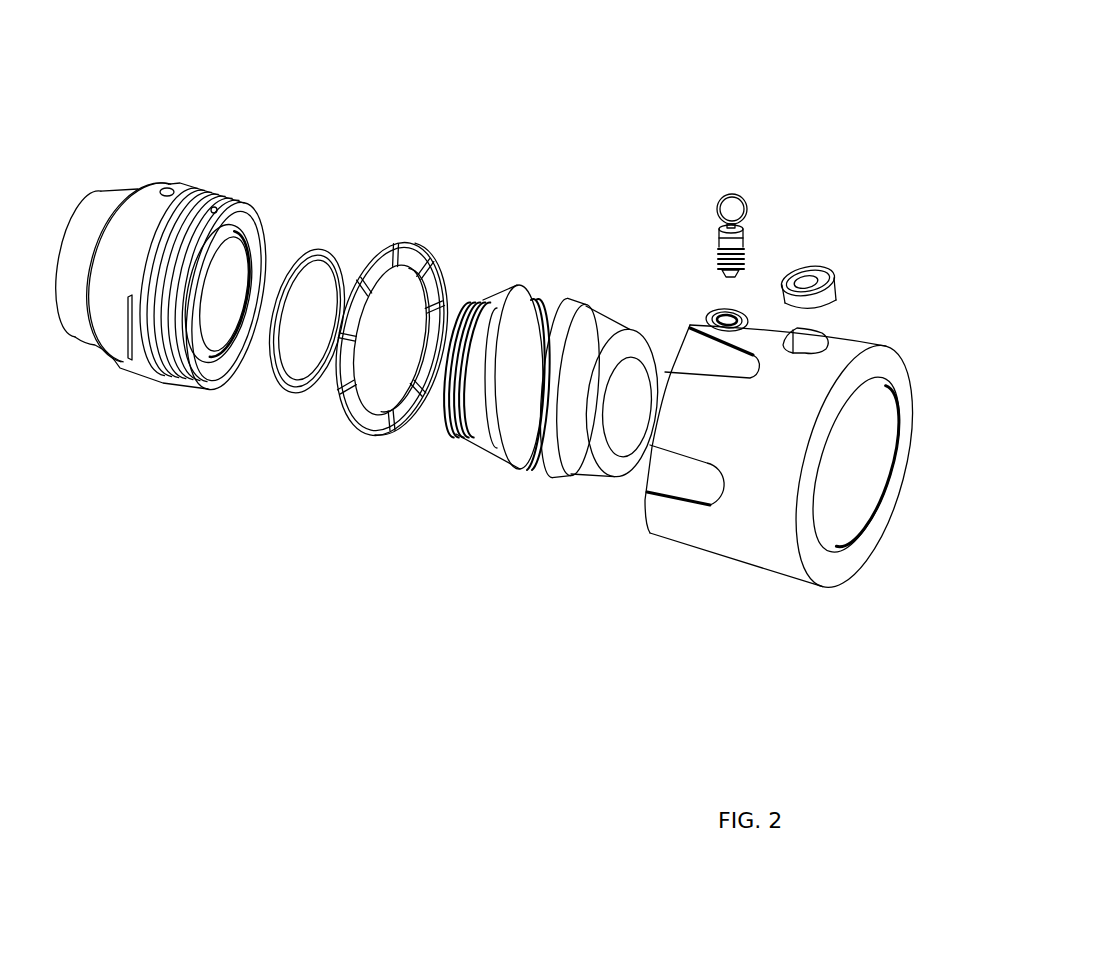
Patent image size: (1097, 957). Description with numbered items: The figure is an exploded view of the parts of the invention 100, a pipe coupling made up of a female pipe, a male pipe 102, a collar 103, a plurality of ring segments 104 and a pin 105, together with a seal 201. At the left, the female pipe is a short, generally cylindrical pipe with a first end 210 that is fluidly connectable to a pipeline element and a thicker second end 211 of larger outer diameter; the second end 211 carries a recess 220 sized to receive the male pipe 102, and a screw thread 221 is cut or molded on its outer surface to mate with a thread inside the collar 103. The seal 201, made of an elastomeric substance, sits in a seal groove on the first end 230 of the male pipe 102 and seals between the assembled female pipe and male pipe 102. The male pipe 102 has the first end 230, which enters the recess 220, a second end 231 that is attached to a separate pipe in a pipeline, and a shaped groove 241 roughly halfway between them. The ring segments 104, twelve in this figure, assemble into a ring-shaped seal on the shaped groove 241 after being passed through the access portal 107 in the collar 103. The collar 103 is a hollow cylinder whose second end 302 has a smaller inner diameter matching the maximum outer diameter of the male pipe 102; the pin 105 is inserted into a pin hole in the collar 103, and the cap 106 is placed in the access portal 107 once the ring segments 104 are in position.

The invention 100 is at (458, 132).
The male pipe 102 is at (566, 272).
The collar 103 is at (763, 587).
The ring segments 104 is at (367, 455).
The pin 105 is at (732, 175).
The cap 106 is at (818, 246).
The access portal 107 is at (823, 320).
The seal 201 is at (286, 409).
The first end 210 is at (86, 352).
The second end 211 is at (208, 402).
The recess 220 is at (246, 282).
The screw thread 221 is at (213, 183).
The first end 230 is at (458, 444).
The second end 231 is at (608, 495).
The shaped groove 241 is at (526, 485).
The second end 302 is at (896, 332).